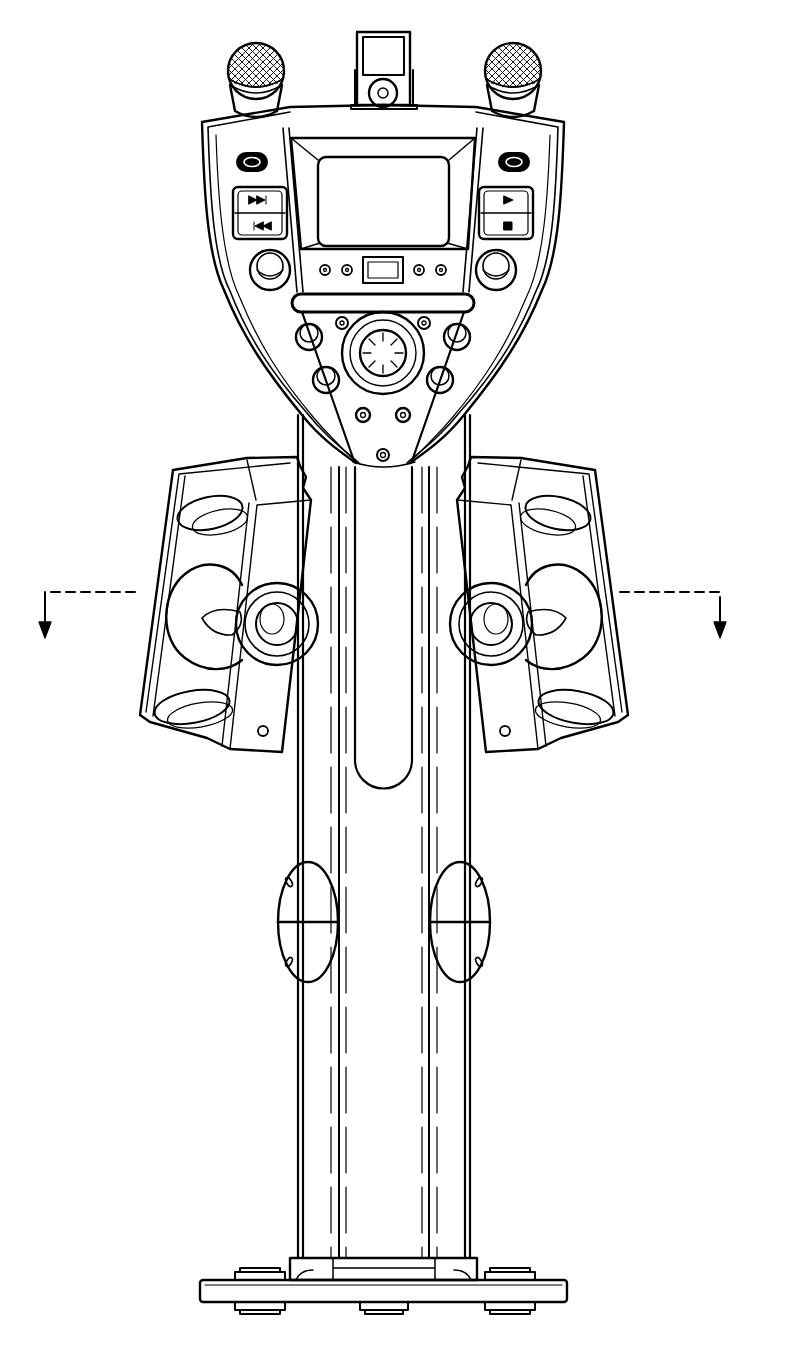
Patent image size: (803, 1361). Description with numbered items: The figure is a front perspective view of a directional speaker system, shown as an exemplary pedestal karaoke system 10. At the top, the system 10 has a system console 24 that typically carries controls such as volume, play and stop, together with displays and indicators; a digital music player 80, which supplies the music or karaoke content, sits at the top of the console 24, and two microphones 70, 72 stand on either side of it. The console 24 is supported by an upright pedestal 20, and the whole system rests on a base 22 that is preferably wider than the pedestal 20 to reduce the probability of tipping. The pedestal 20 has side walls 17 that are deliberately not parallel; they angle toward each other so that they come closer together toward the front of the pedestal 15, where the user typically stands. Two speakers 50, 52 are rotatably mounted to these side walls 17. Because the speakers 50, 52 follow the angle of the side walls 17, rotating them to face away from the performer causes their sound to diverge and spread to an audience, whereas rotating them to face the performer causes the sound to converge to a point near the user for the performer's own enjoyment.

The pedestal karaoke system 10 is at (634, 141).
The front of the pedestal 15 is at (382, 988).
The side walls 17 is at (315, 794).
The pedestal 20 is at (440, 1061).
The base 22 is at (559, 1293).
The system console 24 is at (561, 226).
The speaker 50 is at (580, 547).
The speaker 52 is at (190, 545).
The microphone 70 is at (543, 63).
The microphone 72 is at (232, 60).
The digital music player 80 is at (412, 50).